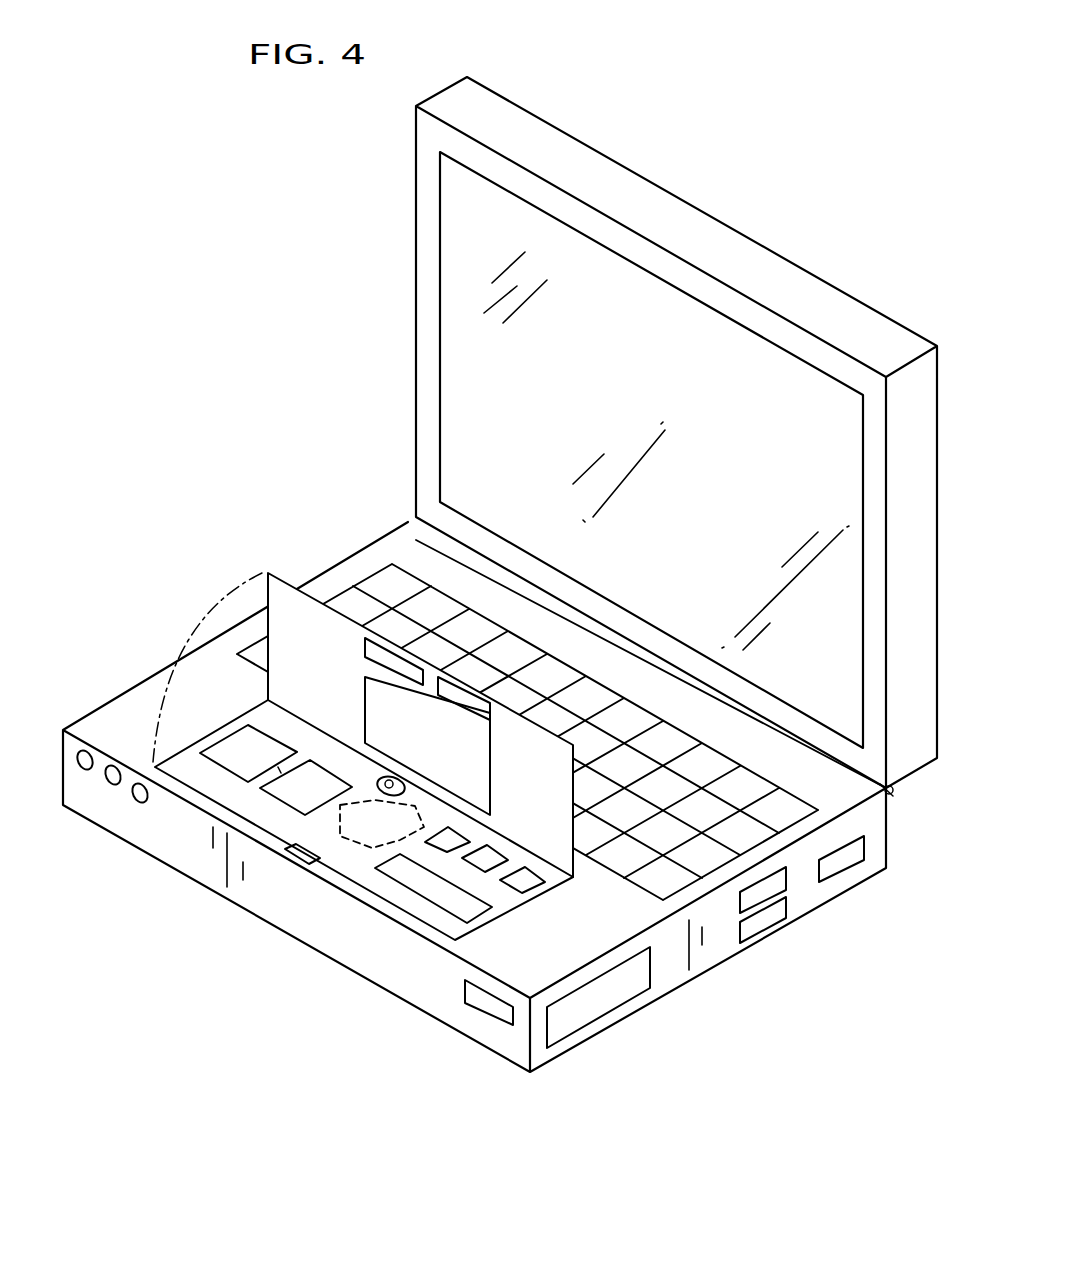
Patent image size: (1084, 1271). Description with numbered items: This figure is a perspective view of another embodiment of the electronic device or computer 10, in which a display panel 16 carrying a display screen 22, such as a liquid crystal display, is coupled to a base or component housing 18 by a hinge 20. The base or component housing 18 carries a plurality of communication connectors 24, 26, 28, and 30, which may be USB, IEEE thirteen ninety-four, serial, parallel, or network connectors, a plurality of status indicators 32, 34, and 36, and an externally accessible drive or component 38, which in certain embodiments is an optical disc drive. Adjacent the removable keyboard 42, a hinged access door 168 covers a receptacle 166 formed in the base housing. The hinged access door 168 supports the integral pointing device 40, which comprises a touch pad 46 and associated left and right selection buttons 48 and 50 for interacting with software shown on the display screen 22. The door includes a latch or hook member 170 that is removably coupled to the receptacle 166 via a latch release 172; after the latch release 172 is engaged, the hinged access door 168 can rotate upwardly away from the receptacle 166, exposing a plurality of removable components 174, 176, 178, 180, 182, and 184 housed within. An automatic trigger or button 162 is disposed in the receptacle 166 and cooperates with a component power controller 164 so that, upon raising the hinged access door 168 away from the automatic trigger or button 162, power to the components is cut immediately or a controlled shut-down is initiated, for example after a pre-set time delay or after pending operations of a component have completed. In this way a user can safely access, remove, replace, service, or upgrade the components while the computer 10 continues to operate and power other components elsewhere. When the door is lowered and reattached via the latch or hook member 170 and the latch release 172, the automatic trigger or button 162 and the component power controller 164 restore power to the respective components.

The computer 10 is at (750, 104).
The display panel 16 is at (814, 272).
The base or component housing 18 is at (555, 1058).
The hinge 20 is at (893, 792).
The display screen 22 is at (563, 240).
The communication connector 24 is at (850, 868).
The communication connector 26 is at (766, 901).
The communication connector 28 is at (757, 943).
The communication connector 30 is at (473, 1007).
The status indicator 32 is at (80, 770).
The status indicator 34 is at (110, 787).
The status indicator 36 is at (140, 803).
The externally accessible drive or component 38 is at (621, 997).
The integral pointing device 40 is at (333, 687).
The removable keyboard 42 is at (383, 565).
The touch pad 46 is at (492, 780).
The left selection button 48 is at (360, 640).
The right selection button 50 is at (493, 717).
The automatic trigger or button 162 is at (384, 778).
The component power controller 164 is at (345, 805).
The receptacle 166 is at (430, 930).
The hinged access door 168 is at (266, 572).
The latch or hook member 170 is at (440, 646).
The latch release 172 is at (290, 860).
The removable component 174 is at (232, 733).
The removable component 176 is at (330, 770).
The removable component 178 is at (483, 921).
The removable component 180 is at (427, 847).
The removable component 182 is at (480, 872).
The removable component 184 is at (547, 885).